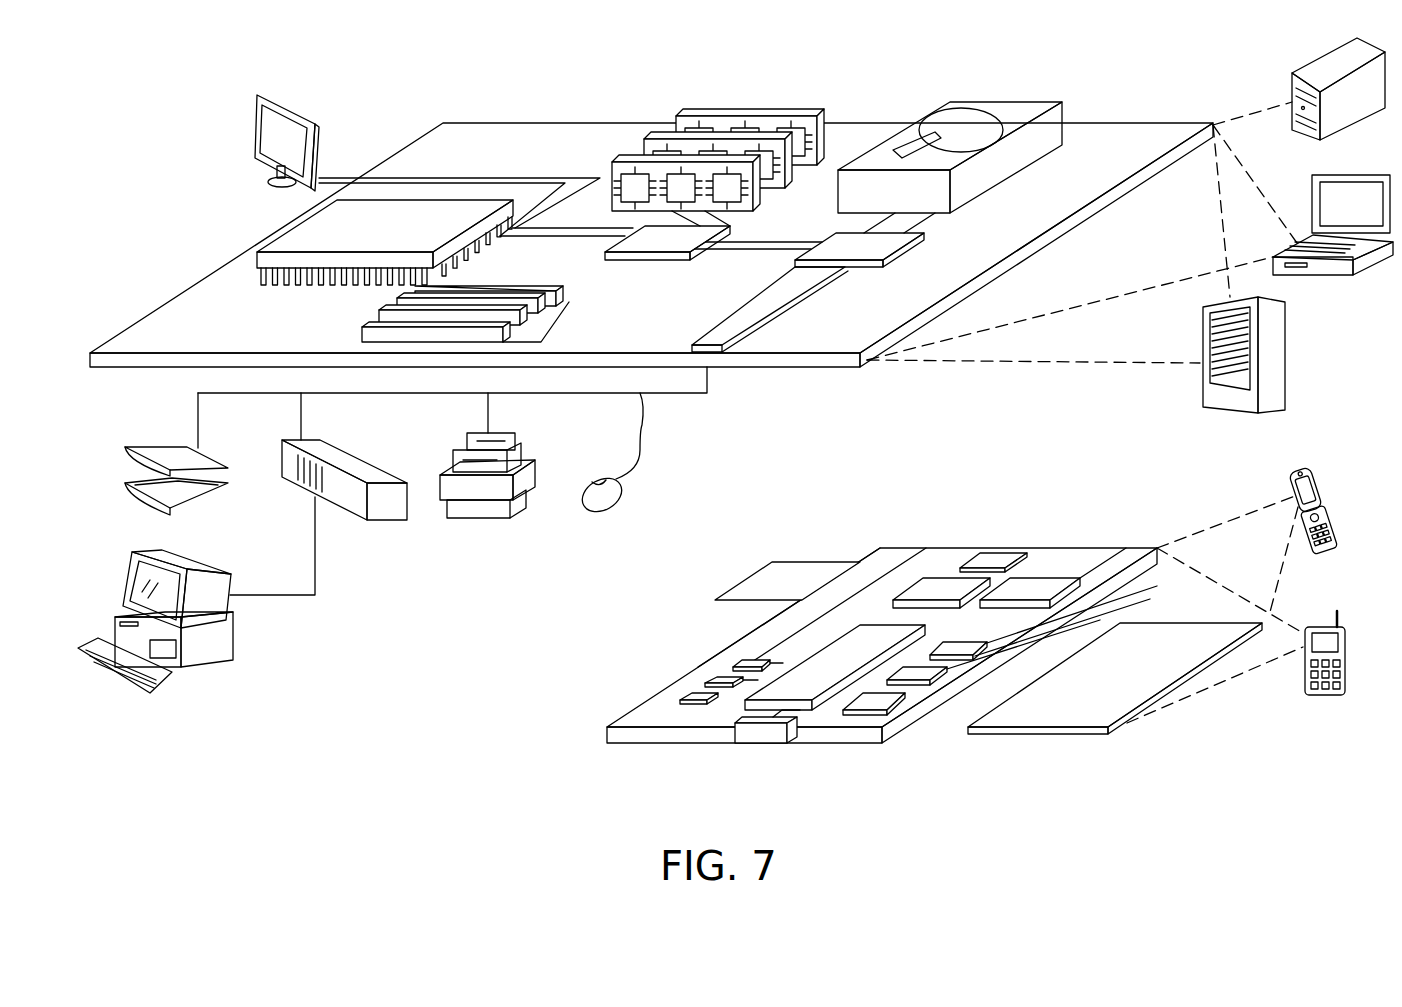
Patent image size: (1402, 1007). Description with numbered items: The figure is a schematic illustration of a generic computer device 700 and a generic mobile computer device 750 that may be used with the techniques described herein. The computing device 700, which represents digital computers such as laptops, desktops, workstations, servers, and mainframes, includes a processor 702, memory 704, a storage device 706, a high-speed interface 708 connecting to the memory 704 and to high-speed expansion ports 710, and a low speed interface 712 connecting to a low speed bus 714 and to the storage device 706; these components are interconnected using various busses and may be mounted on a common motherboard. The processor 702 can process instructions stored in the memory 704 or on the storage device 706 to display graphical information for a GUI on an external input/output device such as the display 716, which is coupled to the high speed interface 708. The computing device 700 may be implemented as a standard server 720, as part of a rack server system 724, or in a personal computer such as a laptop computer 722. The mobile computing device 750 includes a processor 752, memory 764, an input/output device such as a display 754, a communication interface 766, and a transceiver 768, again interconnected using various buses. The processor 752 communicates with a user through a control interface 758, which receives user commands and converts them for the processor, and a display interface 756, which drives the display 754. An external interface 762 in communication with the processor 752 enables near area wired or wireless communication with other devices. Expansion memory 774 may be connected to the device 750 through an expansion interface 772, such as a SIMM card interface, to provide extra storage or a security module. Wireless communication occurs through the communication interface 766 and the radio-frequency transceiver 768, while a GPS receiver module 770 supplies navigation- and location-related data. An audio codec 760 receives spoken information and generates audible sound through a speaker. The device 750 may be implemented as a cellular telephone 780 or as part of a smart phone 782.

The generic computer device 700 is at (391, 62).
The processor 702 is at (281, 230).
The memory 704 is at (753, 117).
The storage device 706 is at (995, 99).
The high-speed interface 708 is at (681, 238).
The high-speed expansion ports 710 is at (387, 315).
The low speed interface 712 is at (832, 243).
The low speed bus 714 is at (713, 338).
The display 716 is at (262, 92).
The standard server 720 is at (1313, 68).
The laptop computer 722 is at (1368, 173).
The rack server system 724 is at (1287, 356).
The generic mobile computer device 750 is at (556, 760).
The processor 752 is at (803, 675).
The display 754 is at (1155, 642).
The display interface 756 is at (883, 698).
The control interface 758 is at (925, 670).
The audio codec 760 is at (963, 640).
The external interface 762 is at (762, 727).
The memory 764 is at (710, 682).
The communication interface 766 is at (940, 580).
The transceiver 768 is at (1038, 580).
The GPS receiver module 770 is at (995, 553).
The expansion interface 772 is at (863, 560).
The expansion memory 774 is at (775, 560).
The cellular telephone 780 is at (1310, 468).
The smart phone 782 is at (1318, 623).